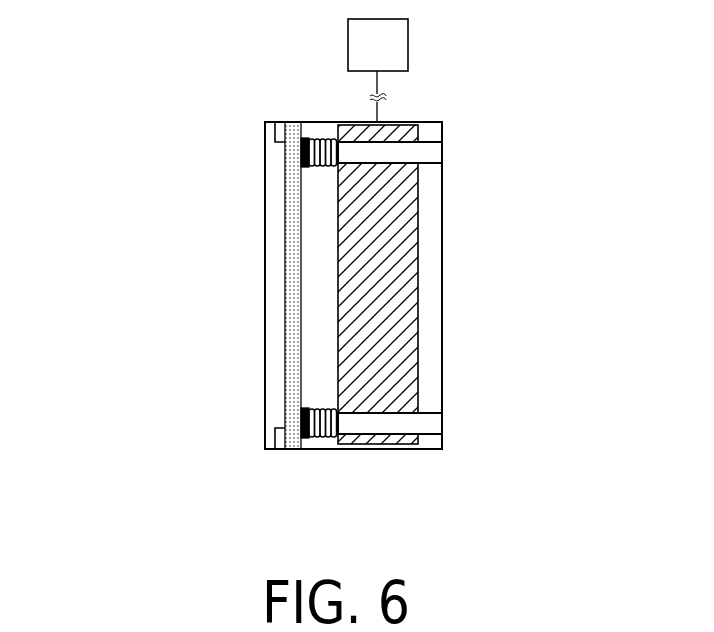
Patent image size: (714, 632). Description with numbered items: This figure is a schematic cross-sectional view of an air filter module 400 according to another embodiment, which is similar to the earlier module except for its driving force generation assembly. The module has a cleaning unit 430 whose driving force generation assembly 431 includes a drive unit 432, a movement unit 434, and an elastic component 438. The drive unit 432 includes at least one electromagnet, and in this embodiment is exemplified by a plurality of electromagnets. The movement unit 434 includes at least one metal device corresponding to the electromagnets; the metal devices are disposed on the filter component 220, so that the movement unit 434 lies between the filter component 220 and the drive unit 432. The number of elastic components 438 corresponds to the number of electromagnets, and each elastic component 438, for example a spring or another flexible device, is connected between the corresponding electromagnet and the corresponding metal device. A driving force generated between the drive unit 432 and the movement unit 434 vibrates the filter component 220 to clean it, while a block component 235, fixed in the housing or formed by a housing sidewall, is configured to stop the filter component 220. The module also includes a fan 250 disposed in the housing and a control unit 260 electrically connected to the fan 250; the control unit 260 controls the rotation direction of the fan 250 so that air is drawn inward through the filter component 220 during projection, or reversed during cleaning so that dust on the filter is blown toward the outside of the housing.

The air filter module 400 is at (640, 462).
The filter component 220 is at (293, 122).
The block component 235 is at (281, 140).
The fan 250 is at (400, 242).
The control unit 260 is at (400, 43).
The cleaning unit 430 is at (99, 340).
The driving force generation assembly 431 is at (169, 400).
The movement unit 434 is at (290, 420).
The elastic component 438 is at (314, 436).
The drive unit 432 is at (382, 422).